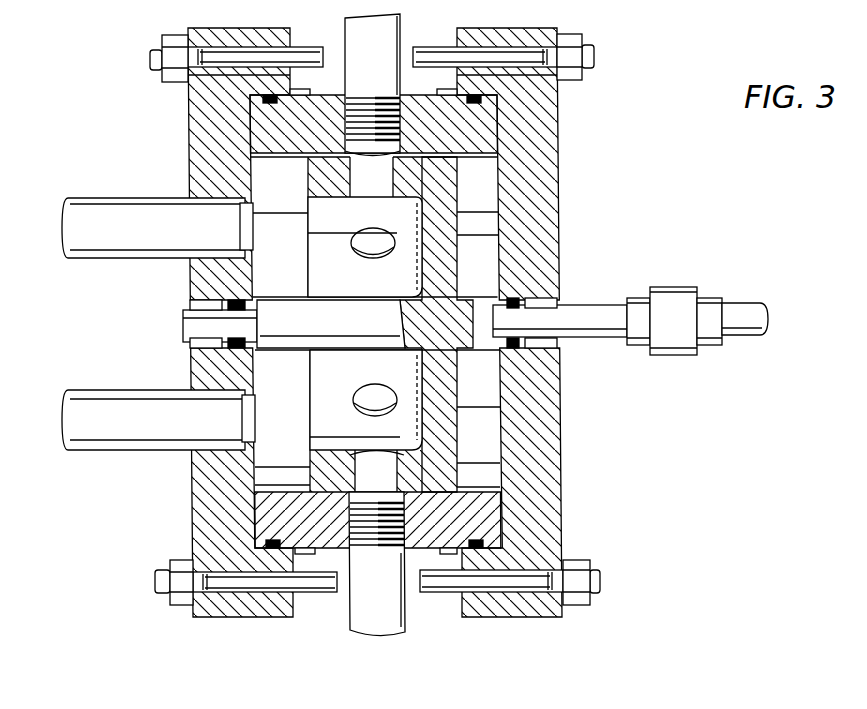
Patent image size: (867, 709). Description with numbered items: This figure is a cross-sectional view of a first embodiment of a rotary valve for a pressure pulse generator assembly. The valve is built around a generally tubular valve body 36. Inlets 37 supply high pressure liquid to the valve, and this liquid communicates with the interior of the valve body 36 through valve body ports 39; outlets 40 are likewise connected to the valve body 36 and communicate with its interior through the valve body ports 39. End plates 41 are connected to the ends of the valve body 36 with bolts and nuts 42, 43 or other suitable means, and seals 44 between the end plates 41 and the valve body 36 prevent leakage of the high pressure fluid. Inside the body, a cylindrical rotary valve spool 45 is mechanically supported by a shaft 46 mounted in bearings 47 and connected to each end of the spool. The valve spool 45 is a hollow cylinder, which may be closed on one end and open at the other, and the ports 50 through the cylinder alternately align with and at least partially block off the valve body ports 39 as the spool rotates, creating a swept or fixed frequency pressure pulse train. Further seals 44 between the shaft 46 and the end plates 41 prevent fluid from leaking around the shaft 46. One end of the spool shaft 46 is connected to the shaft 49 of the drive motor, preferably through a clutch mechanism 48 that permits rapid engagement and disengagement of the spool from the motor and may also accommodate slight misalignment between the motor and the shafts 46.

The valve body 36 is at (450, 557).
The inlets 37 is at (87, 258).
The valve body ports 39 is at (387, 152).
The outlets 40 is at (400, 32).
The end plates 41 is at (193, 516).
The bolts 42 is at (594, 60).
The nuts 43 is at (162, 36).
The seals 44 is at (240, 350).
The rotary valve spool 45 is at (455, 278).
The shaft 46 is at (183, 317).
The bearings 47 is at (207, 302).
The clutch mechanism 48 is at (677, 287).
The shaft of the drive motor 49 is at (752, 340).
The ports 50 is at (383, 181).